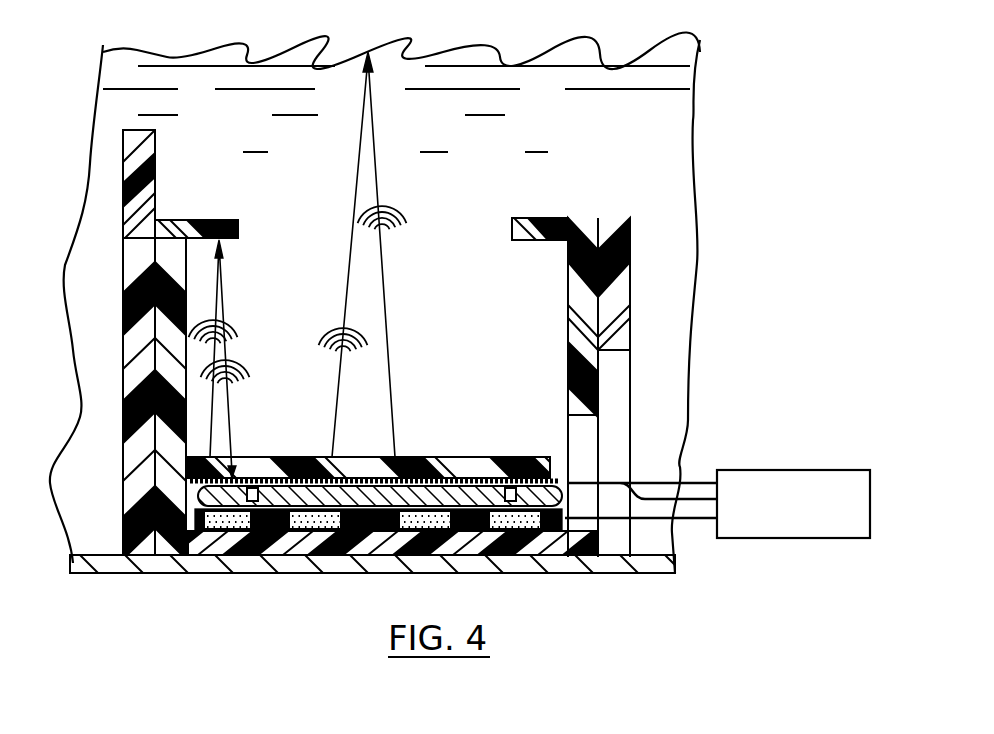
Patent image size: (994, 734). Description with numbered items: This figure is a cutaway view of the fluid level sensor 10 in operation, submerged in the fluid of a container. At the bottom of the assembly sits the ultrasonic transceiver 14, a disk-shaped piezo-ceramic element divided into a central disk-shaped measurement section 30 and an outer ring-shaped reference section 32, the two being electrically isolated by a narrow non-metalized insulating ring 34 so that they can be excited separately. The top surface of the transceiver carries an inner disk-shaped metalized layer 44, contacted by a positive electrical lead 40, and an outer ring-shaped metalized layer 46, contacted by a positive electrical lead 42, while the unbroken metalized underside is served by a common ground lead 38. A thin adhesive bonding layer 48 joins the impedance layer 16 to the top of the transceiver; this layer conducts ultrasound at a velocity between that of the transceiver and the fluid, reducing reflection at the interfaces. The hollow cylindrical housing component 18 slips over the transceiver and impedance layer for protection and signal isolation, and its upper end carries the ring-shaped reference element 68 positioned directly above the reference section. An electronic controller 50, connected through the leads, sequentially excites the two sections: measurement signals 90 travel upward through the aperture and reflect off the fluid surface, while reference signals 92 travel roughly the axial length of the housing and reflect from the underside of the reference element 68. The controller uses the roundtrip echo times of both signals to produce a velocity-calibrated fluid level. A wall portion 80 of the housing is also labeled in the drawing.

The fluid level sensor 10 is at (693, 150).
The ultrasonic transceiver 14 is at (198, 487).
The impedance layer 16 is at (395, 432).
The housing component 18 is at (150, 366).
The measurement section 30 is at (270, 576).
The reference section 32 is at (510, 533).
The insulating ring 34 is at (548, 494).
The common ground lead 38 is at (612, 520).
The positive electrical lead 40 is at (701, 500).
The positive electrical lead 42 is at (688, 500).
The inner disk-shaped metalized layer 44 is at (525, 480).
The outer ring-shaped metalized layer 46 is at (558, 512).
The bonding layer 48 is at (475, 458).
The electronic controller 50 is at (803, 470).
The ring-shaped reference element 68 is at (233, 226).
The upper wall portion 80 is at (123, 340).
The measurement signals 90 is at (357, 150).
The reference signals 92 is at (225, 305).